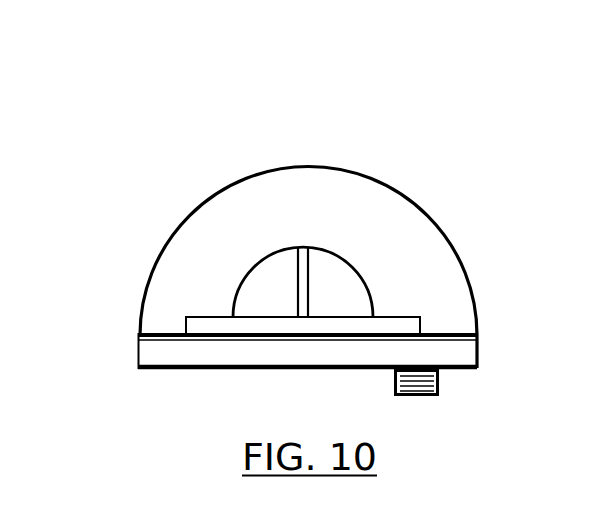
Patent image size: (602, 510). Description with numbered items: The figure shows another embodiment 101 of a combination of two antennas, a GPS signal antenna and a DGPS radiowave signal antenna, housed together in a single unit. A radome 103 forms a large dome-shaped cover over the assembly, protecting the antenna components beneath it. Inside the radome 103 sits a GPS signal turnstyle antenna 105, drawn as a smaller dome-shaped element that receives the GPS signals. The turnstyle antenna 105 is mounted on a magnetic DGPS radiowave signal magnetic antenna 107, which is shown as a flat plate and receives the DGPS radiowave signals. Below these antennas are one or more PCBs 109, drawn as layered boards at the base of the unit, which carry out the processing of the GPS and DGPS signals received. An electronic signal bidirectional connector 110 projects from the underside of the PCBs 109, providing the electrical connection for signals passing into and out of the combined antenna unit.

The embodiment of a combination of the two antennas 101 is at (432, 118).
The radome 103 is at (420, 207).
The GPS signal turnstyle antenna 105 is at (342, 256).
The magnetic DGPS radiowave signal magnetic antenna 107 is at (383, 327).
The PCBs 109 is at (138, 335).
The electronic signal bidirectional connector 110 is at (440, 382).